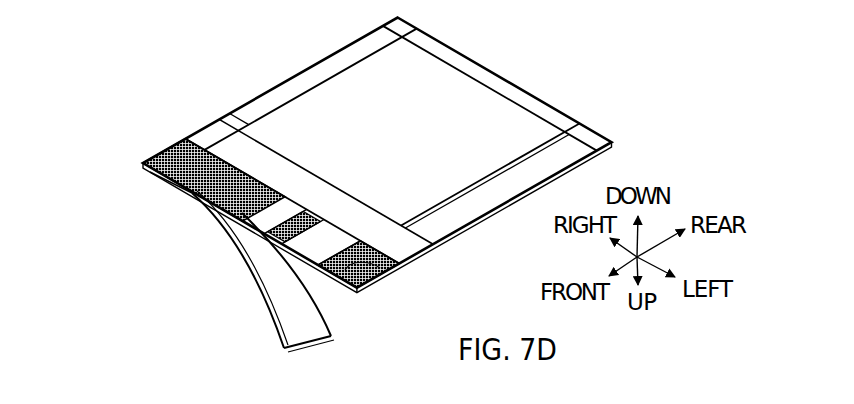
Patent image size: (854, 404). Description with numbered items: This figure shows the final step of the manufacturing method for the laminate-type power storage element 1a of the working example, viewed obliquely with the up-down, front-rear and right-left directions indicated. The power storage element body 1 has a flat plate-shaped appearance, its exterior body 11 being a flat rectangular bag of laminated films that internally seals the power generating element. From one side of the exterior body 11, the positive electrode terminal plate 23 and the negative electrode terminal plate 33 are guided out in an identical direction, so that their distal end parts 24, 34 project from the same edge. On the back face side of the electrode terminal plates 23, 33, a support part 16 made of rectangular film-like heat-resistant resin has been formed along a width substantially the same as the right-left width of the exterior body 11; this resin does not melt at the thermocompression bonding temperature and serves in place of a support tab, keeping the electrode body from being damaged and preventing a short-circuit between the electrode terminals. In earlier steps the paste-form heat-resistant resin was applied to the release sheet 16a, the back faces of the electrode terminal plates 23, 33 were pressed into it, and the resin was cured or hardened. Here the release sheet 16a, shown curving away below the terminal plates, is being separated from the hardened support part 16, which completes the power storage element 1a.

The power storage element body 1 is at (413, 125).
The power storage element 1a is at (526, 52).
The exterior body 11 is at (333, 66).
The support part 16 is at (388, 271).
The release sheet 16a is at (250, 262).
The positive electrode terminal plate 23 is at (333, 237).
The distal end part 24 is at (345, 272).
The negative electrode terminal plate 33 is at (284, 220).
The distal end part 34 is at (227, 213).